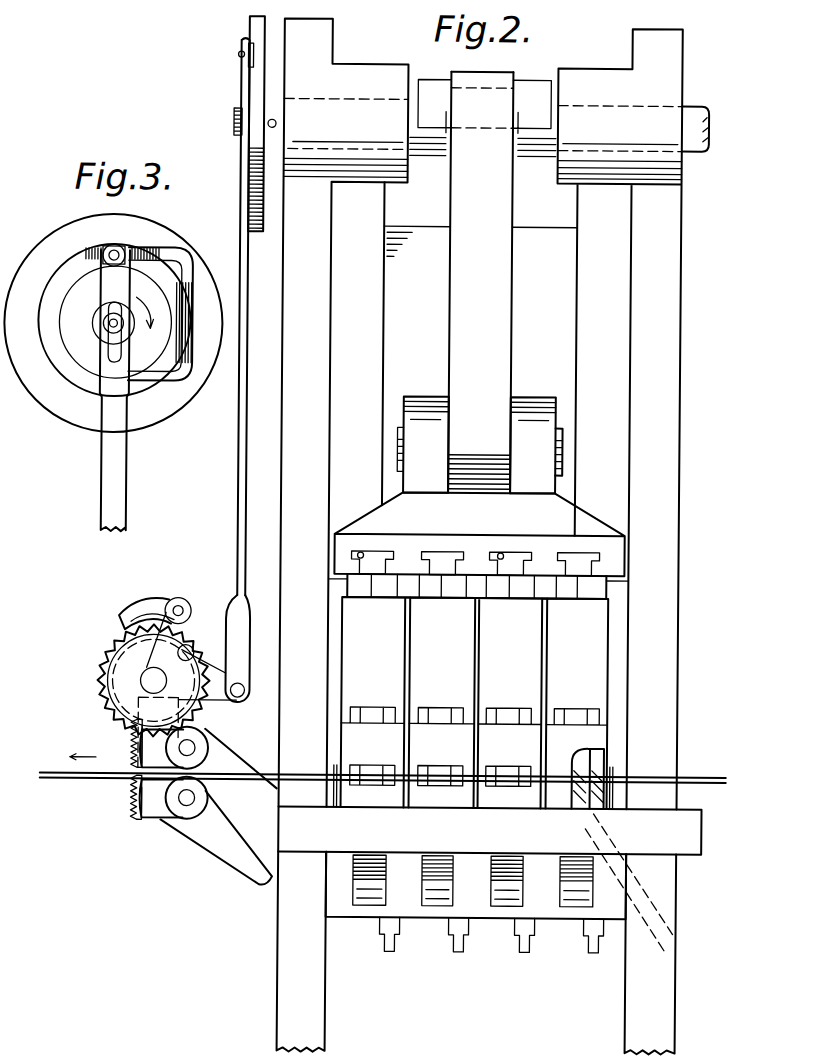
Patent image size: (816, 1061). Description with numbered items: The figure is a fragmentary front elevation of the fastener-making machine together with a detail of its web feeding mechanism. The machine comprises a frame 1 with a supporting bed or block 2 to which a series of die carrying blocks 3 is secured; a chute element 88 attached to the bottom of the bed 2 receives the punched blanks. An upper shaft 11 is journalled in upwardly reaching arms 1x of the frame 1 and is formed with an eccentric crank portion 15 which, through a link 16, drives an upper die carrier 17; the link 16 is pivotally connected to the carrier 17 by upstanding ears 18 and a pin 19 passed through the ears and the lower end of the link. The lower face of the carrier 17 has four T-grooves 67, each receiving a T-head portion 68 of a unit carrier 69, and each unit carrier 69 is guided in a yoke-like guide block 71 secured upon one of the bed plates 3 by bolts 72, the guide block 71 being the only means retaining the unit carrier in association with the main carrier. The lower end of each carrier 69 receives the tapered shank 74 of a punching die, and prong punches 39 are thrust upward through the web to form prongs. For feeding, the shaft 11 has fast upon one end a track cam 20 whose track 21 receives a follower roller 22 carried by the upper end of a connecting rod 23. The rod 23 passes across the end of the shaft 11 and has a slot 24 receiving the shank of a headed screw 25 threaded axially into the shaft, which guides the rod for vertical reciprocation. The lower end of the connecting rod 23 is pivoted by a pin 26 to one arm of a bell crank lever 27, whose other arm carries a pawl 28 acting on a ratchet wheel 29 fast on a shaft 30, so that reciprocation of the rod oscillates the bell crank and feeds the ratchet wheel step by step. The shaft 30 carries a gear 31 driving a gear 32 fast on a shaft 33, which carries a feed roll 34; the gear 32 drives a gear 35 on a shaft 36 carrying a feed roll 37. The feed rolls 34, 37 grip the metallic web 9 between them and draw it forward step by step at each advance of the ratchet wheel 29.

In FIG. 2, the frame 1 is at (284, 966).
In FIG. 2, the upwardly reaching arms 1x is at (291, 402).
In FIG. 2, the supporting bed or block 2 is at (464, 846).
In FIG. 2, the die carrying blocks 3 is at (353, 800).
In FIG. 2, the web 9 is at (85, 778).
In FIG. 3, the upper shaft 11 is at (134, 341).
In FIG. 2, the upper shaft 11 is at (693, 115).
In FIG. 2, the eccentric crank portion 15 is at (478, 88).
In FIG. 2, the link 16 is at (500, 285).
In FIG. 2, the upper die carrier 17 is at (578, 516).
In FIG. 2, the upstanding ears 18 is at (515, 440).
In FIG. 2, the pin 19 is at (565, 440).
In FIG. 3, the track cam 20 is at (51, 238).
In FIG. 2, the track cam 20 is at (249, 33).
In FIG. 3, the track 21 is at (160, 248).
In FIG. 3, the follower roller 22 is at (126, 258).
In FIG. 2, the follower roller 22 is at (252, 55).
In FIG. 3, the connecting rod 23 is at (113, 484).
In FIG. 2, the connecting rod 23 is at (246, 532).
In FIG. 3, the slot 24 is at (108, 358).
In FIG. 3, the headed screw 25 is at (104, 326).
In FIG. 2, the headed screw 25 is at (231, 120).
In FIG. 2, the pin 26 is at (242, 700).
In FIG. 2, the bell crank lever 27 is at (227, 672).
In FIG. 2, the pawl 28 is at (157, 608).
In FIG. 2, the ratchet wheel 29 is at (120, 646).
In FIG. 2, the shaft 30 is at (155, 676).
In FIG. 2, the gear 31 is at (122, 702).
In FIG. 2, the gear 32 is at (134, 736).
In FIG. 2, the shaft 33 is at (191, 748).
In FIG. 2, the feed roll 34 is at (135, 749).
In FIG. 2, the gear 35 is at (148, 822).
In FIG. 2, the shaft 36 is at (191, 802).
In FIG. 2, the feed roll 37 is at (138, 812).
In FIG. 2, the prong punches 39 is at (385, 944).
In FIG. 2, the T-grooves 67 is at (363, 553).
In FIG. 2, the T-head portion 68 is at (387, 556).
In FIG. 2, the unit carrier 69 is at (345, 590).
In FIG. 2, the guide block 71 is at (348, 642).
In FIG. 2, the bolts 72 is at (375, 710).
In FIG. 2, the tapered shank 74 is at (375, 775).
In FIG. 2, the chute element 88 is at (441, 912).